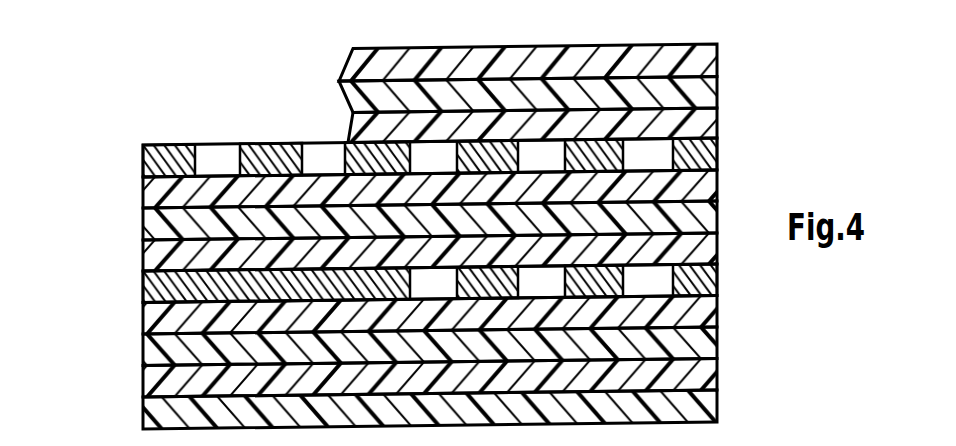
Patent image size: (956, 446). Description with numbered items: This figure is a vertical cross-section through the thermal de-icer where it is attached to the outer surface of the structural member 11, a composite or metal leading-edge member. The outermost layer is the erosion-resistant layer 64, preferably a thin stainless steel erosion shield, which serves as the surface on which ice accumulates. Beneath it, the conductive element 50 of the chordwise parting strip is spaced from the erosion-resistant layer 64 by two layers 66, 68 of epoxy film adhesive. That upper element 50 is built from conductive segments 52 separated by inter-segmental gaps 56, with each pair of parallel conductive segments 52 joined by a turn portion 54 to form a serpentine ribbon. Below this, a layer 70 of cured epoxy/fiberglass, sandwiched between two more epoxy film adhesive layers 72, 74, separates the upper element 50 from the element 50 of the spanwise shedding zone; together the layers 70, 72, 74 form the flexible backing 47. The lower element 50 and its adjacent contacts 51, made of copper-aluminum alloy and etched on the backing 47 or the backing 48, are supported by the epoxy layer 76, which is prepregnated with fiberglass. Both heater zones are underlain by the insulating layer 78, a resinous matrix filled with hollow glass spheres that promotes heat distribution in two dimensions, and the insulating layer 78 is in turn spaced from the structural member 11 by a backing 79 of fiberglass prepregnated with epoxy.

The structural member 11 is at (705, 405).
The flexible backing 47 is at (82, 178).
The flexible backing 48 is at (82, 303).
The conductive element 50 is at (128, 142).
The contact 51 is at (695, 278).
The conductive segment 52 is at (712, 158).
The turn portion 54 is at (430, 292).
The inter-segmental gap 56 is at (540, 155).
The erosion-resistant layer 64 is at (707, 64).
The epoxy film adhesive layer 66 is at (708, 96).
The epoxy film adhesive layer 68 is at (706, 128).
The cured epoxy/fiberglass layer 70 is at (700, 210).
The epoxy film adhesive layer 72 is at (696, 188).
The epoxy film adhesive layer 74 is at (697, 252).
The epoxy layer 76 is at (698, 311).
The insulating layer 78 is at (703, 344).
The backing 79 is at (705, 379).